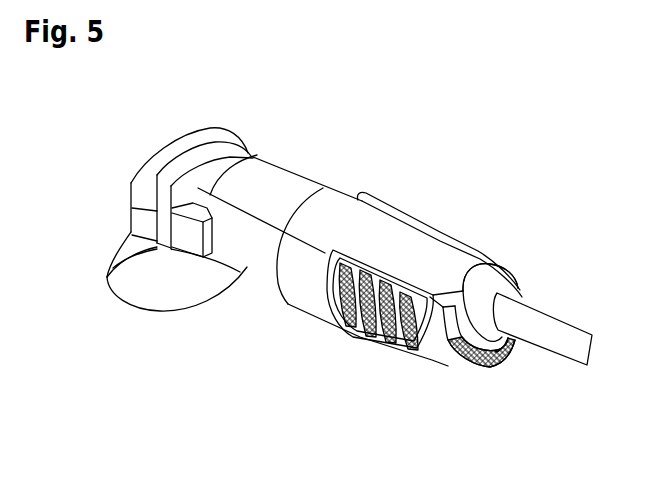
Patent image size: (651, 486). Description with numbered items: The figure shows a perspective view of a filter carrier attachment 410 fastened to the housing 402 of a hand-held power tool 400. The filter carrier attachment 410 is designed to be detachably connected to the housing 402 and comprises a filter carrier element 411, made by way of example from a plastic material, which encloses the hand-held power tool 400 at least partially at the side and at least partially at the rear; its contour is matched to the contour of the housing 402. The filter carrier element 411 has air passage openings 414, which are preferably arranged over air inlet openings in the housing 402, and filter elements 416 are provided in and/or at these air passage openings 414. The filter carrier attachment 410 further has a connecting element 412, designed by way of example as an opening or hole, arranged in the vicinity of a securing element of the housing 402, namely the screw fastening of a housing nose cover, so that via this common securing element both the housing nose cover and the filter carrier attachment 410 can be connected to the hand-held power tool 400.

The hand-held power tool 400 is at (498, 153).
The housing 402 is at (345, 190).
The filter carrier attachment 410 is at (361, 344).
The filter carrier element 411 is at (483, 251).
The connecting element 412 is at (508, 367).
The air passage openings 414 is at (375, 347).
The filter elements 416 is at (463, 367).